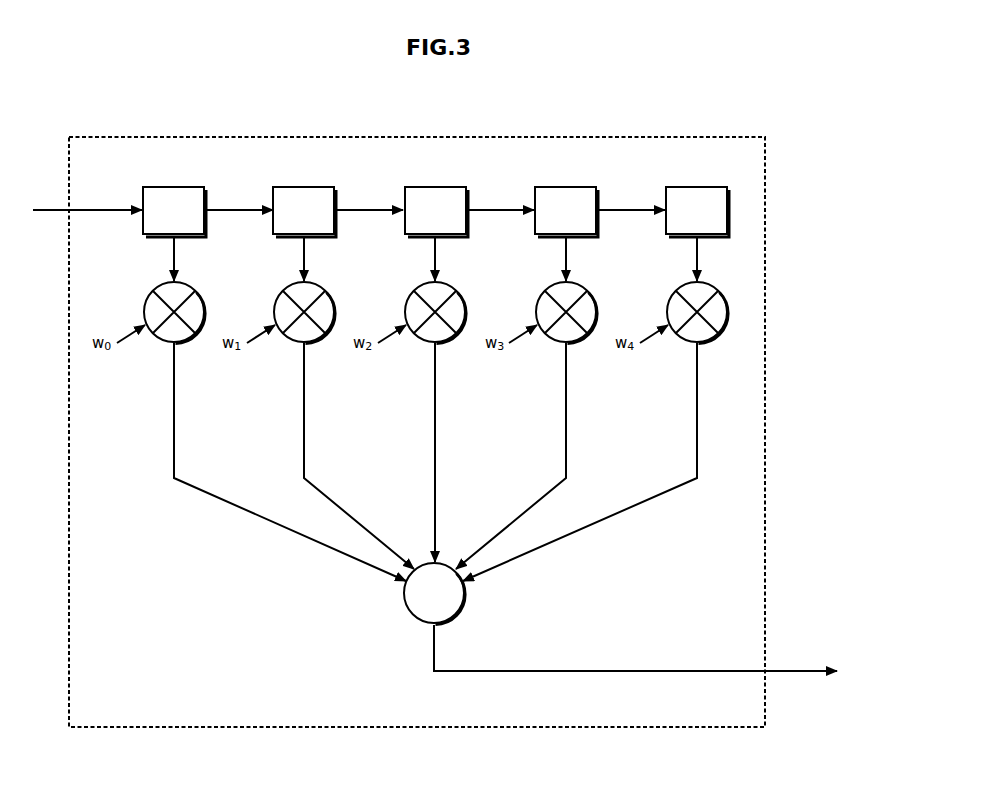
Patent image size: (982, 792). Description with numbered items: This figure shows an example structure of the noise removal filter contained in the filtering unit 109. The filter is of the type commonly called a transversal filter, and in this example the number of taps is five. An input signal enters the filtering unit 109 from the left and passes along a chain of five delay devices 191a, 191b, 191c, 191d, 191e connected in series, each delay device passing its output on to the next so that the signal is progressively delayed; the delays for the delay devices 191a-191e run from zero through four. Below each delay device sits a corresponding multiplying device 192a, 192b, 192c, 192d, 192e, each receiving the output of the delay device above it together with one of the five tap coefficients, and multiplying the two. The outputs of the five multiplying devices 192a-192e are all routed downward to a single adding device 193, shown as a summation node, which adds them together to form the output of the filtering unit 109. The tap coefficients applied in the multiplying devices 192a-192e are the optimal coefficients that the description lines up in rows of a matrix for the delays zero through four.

The filtering unit 109 is at (140, 137).
The delay device 191a is at (193, 187).
The delay device 191b is at (354, 168).
The delay device 191c is at (486, 168).
The delay device 191d is at (616, 168).
The delay device 191e is at (747, 168).
The multiplying device 192a is at (222, 268).
The multiplying device 192b is at (352, 268).
The multiplying device 192c is at (483, 268).
The multiplying device 192d is at (614, 268).
The multiplying device 192e is at (745, 268).
The adding device 193 is at (415, 621).